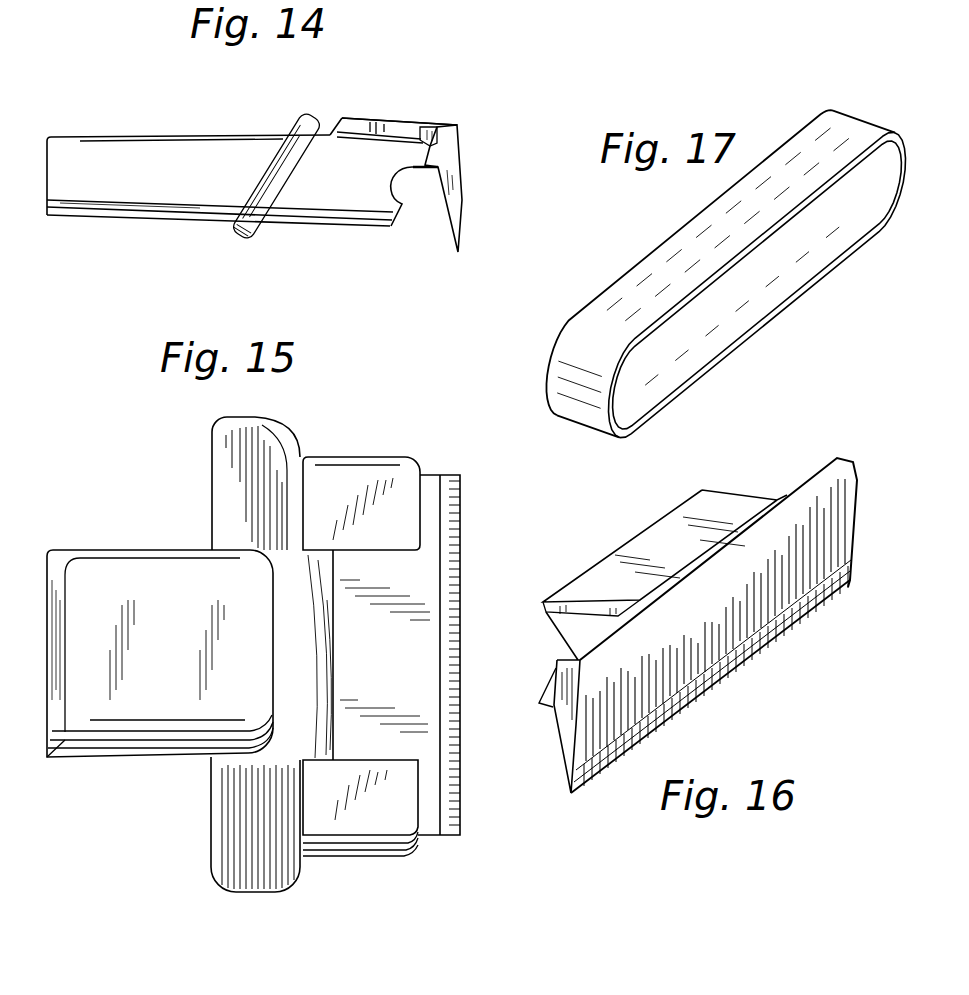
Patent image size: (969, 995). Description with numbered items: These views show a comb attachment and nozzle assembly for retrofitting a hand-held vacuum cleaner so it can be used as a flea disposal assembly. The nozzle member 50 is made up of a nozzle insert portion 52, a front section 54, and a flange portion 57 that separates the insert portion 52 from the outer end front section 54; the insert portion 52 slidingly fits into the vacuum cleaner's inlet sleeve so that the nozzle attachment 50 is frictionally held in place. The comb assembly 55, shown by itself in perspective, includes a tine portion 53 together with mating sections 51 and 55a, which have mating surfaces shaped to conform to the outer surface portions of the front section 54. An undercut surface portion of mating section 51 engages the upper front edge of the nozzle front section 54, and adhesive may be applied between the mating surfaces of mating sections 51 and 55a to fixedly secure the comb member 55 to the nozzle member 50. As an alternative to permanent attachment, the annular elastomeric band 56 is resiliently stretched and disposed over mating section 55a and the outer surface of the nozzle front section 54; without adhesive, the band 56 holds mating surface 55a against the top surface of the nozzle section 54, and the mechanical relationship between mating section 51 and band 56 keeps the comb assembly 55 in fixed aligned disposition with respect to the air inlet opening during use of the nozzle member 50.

In FIG. 14, the nozzle member 50 is at (133, 126).
In FIG. 15, the nozzle member 50 is at (115, 542).
In FIG. 14, the mating section 51 is at (421, 128).
In FIG. 16, the mating section 51 is at (550, 693).
In FIG. 14, the nozzle insert portion 52 is at (180, 192).
In FIG. 15, the nozzle insert portion 52 is at (188, 667).
In FIG. 14, the tine portion 53 is at (458, 222).
In FIG. 15, the tine portion 53 is at (458, 548).
In FIG. 16, the tine portion 53 is at (700, 703).
In FIG. 14, the front section 54 is at (362, 192).
In FIG. 15, the front section 54 is at (362, 472).
In FIG. 14, the comb assembly 55 is at (468, 131).
In FIG. 15, the comb assembly 55 is at (445, 462).
In FIG. 16, the comb assembly 55 is at (861, 472).
In FIG. 14, the mating section 55a is at (362, 122).
In FIG. 15, the mating section 55a is at (410, 663).
In FIG. 16, the mating section 55a is at (695, 540).
In FIG. 17, the annular elastomeric band 56 is at (683, 294).
In FIG. 14, the flange portion 57 is at (290, 143).
In FIG. 15, the flange portion 57 is at (222, 453).